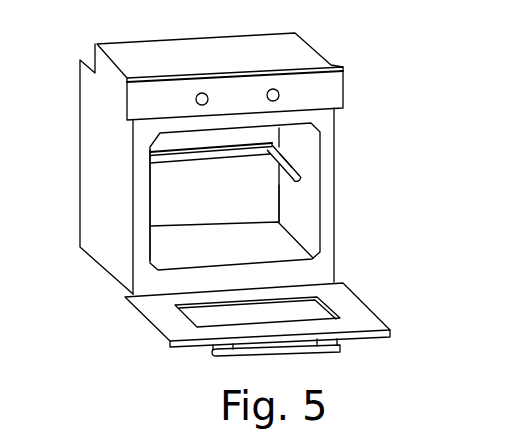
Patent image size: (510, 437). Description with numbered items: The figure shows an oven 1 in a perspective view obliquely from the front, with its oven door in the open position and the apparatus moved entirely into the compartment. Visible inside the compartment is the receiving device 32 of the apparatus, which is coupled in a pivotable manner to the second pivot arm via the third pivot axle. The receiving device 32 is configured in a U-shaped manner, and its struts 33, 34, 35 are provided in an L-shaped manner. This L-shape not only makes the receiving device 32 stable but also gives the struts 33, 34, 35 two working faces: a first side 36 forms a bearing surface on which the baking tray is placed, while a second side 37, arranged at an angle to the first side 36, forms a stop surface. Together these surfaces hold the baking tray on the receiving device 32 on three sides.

The oven 1 is at (111, 307).
The receiving device 32 is at (295, 155).
The strut 33 is at (303, 178).
The strut 34 is at (255, 142).
The strut 35 is at (152, 196).
The first side 36 is at (290, 183).
The second side 37 is at (300, 166).